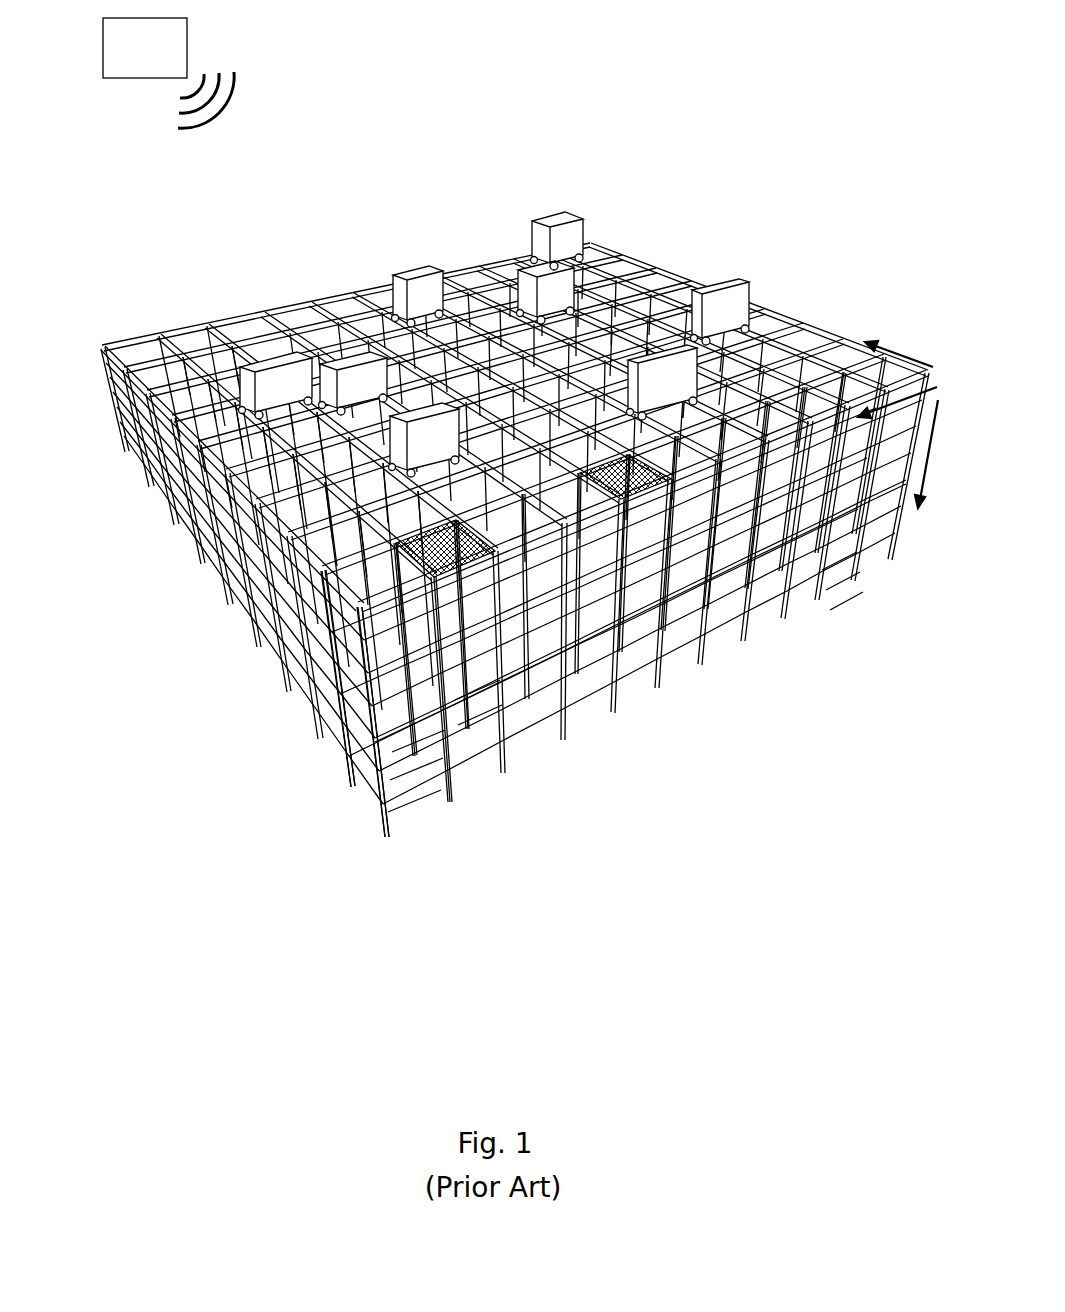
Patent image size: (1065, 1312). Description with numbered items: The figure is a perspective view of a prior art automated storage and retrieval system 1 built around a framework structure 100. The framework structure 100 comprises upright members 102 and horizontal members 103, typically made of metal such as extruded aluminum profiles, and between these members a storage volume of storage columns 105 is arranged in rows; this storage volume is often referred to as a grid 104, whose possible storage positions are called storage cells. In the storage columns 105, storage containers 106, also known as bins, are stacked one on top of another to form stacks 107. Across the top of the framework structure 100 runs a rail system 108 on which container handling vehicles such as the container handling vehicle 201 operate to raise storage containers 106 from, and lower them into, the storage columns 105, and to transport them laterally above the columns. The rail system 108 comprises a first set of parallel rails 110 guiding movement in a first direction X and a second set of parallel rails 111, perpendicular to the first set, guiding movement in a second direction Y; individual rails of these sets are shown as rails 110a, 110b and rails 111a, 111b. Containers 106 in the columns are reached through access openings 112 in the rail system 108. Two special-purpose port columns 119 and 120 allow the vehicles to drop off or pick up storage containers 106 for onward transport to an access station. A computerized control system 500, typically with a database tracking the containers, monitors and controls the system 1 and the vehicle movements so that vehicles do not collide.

The automated storage and retrieval system 1 is at (452, 138).
The control system 500 is at (168, 73).
The framework structure 100 is at (120, 518).
The upright members 102 is at (367, 716).
The horizontal members 103 is at (637, 478).
The grid 104 is at (99, 367).
The storage columns 105 is at (290, 616).
The storage containers 106 is at (453, 616).
The stacks 107 is at (803, 597).
The rail system 108 is at (853, 348).
The first set of parallel rails 110 is at (800, 372).
The first rail of rail pair 110 110a is at (257, 332).
The second rail of rail pair 110 110b is at (260, 330).
The second set of parallel rails 111 is at (364, 332).
The first rail of rail pair 111 111a is at (215, 337).
The second rail of rail pair 111 111b is at (274, 335).
The access openings 112 is at (640, 307).
The port column 119 is at (457, 560).
The port column 120 is at (720, 565).
The container handling vehicle 201 is at (578, 229).